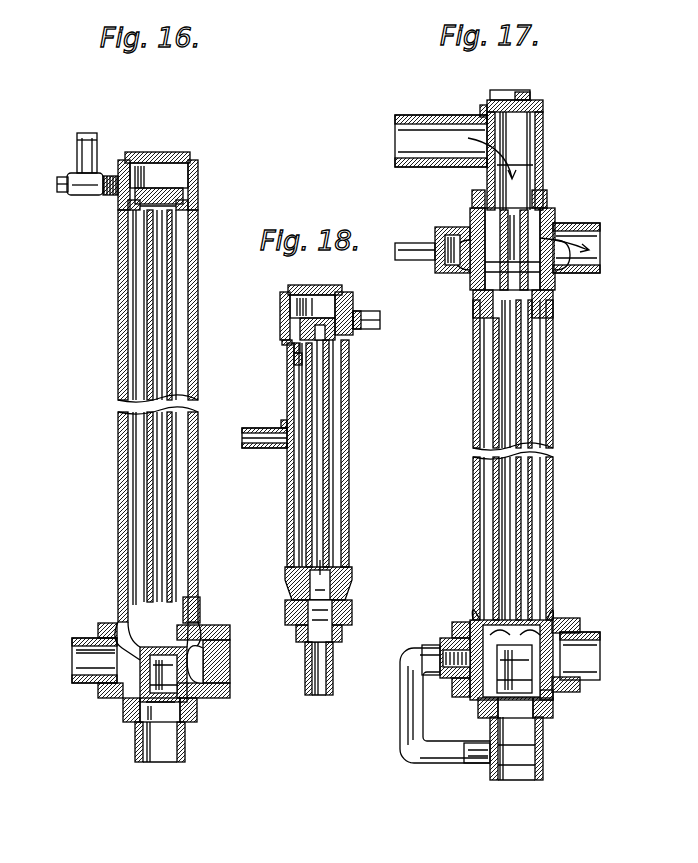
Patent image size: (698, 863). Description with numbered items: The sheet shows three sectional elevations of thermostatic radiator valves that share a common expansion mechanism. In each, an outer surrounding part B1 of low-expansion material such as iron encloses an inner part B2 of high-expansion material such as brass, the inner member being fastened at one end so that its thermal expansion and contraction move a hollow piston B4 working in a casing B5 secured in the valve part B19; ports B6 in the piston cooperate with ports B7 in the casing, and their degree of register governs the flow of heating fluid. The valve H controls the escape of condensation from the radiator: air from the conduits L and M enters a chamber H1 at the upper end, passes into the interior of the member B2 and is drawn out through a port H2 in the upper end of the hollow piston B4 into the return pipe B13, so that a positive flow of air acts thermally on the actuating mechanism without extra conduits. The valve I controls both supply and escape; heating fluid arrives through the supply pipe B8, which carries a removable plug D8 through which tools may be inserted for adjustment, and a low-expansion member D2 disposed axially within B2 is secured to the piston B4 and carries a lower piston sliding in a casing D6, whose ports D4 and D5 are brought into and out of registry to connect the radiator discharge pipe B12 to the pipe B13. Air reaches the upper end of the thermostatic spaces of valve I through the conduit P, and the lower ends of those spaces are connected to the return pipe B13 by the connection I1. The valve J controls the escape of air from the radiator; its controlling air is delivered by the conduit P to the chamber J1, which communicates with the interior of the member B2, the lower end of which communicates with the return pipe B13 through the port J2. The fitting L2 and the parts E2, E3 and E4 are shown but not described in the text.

In FIG. 16, the conduit L is at (92, 143).
In FIG. 16, the elbow fitting L2 is at (88, 196).
In FIG. 16, the conduit M is at (57, 185).
In FIG. 16, the chamber H1 is at (183, 186).
In FIG. 16, the valve H is at (175, 407).
In FIG. 16, the port H2 is at (175, 628).
In FIG. 16, the outer surrounding part B1 is at (198, 258).
In FIG. 17, the outer surrounding part B1 is at (553, 375).
In FIG. 16, the inner part B2 is at (172, 300).
In FIG. 18, the inner part B2 is at (330, 410).
In FIG. 17, the inner part B2 is at (535, 348).
In FIG. 16, the hollow piston B4 is at (185, 652).
In FIG. 18, the hollow piston B4 is at (318, 621).
In FIG. 17, the hollow piston B4 is at (568, 226).
In FIG. 16, the casing B5 is at (198, 706).
In FIG. 17, the casing B5 is at (547, 200).
In FIG. 16, the ports B6 is at (130, 712).
In FIG. 17, the ports B6 is at (476, 197).
In FIG. 16, the ports B7 is at (110, 695).
In FIG. 17, the ports B7 is at (472, 225).
In FIG. 17, the supply pipe B8 is at (425, 135).
In FIG. 16, the radiator discharge pipe B12 is at (80, 663).
In FIG. 17, the radiator discharge pipe B12 is at (585, 668).
In FIG. 16, the return pipe B13 is at (172, 740).
In FIG. 18, the return pipe B13 is at (333, 680).
In FIG. 17, the return pipe B13 is at (525, 768).
In FIG. 16, the valve part B19 is at (104, 630).
In FIG. 18, the chamber J1 is at (328, 287).
In FIG. 18, the main controlling valve J is at (323, 453).
In FIG. 18, the port J2 is at (330, 560).
In FIG. 18, the conduit P is at (366, 315).
In FIG. 17, the conduit P is at (408, 250).
In FIG. 18, the side pipe E2 is at (265, 428).
In FIG. 18, the packing E3 is at (294, 347).
In FIG. 18, the packing ring E4 is at (296, 362).
In FIG. 17, the member D2 is at (522, 441).
In FIG. 17, the ports D4 is at (540, 632).
In FIG. 17, the ports D5 is at (558, 652).
In FIG. 17, the casing D6 is at (553, 712).
In FIG. 17, the removable plug D8 is at (522, 100).
In FIG. 17, the valve I is at (534, 460).
In FIG. 17, the connection I1 is at (408, 707).